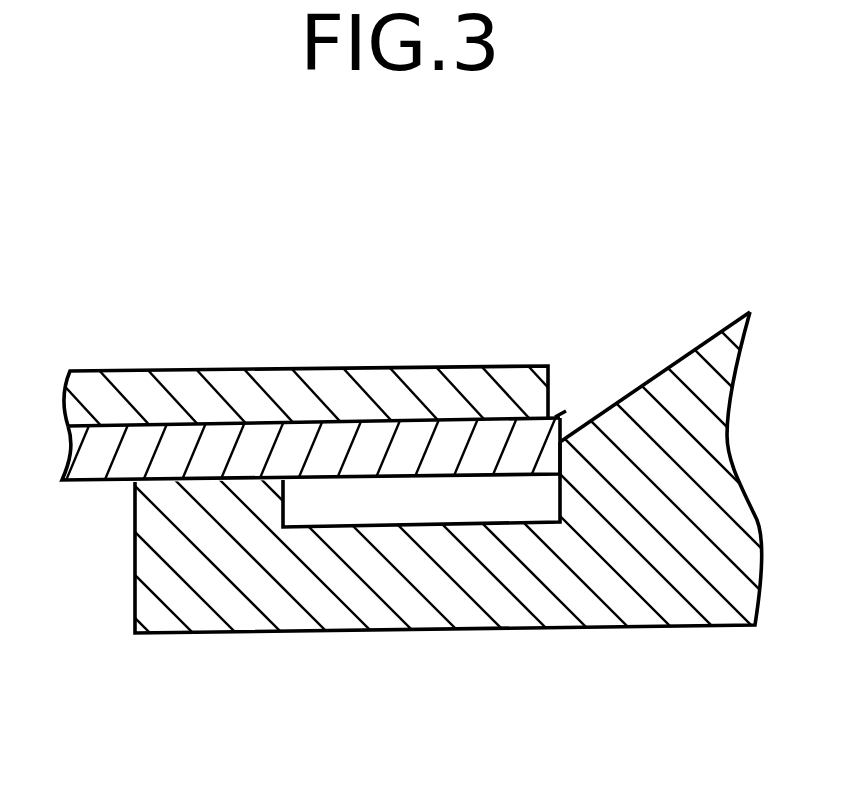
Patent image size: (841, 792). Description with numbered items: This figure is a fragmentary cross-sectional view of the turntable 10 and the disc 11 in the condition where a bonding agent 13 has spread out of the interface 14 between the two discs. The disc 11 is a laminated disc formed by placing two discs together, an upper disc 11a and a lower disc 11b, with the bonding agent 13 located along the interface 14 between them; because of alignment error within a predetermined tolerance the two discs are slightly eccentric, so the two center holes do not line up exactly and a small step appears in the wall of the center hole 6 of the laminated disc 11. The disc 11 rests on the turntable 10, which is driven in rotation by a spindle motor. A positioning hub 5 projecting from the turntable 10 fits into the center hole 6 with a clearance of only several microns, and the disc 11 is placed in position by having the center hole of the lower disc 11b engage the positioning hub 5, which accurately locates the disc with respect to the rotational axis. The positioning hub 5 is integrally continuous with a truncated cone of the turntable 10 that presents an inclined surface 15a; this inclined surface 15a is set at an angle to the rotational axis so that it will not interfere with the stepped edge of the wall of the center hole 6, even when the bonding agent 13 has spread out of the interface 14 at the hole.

The positioning hub 5 is at (562, 498).
The center hole 6 is at (587, 390).
The turntable 10 is at (475, 612).
The disc 11 is at (308, 412).
The upper layer 11a is at (158, 385).
The lower disc 11b is at (112, 460).
The bonding agent 13 is at (563, 412).
The interface 14 is at (450, 420).
The inclined surface 15a is at (666, 368).